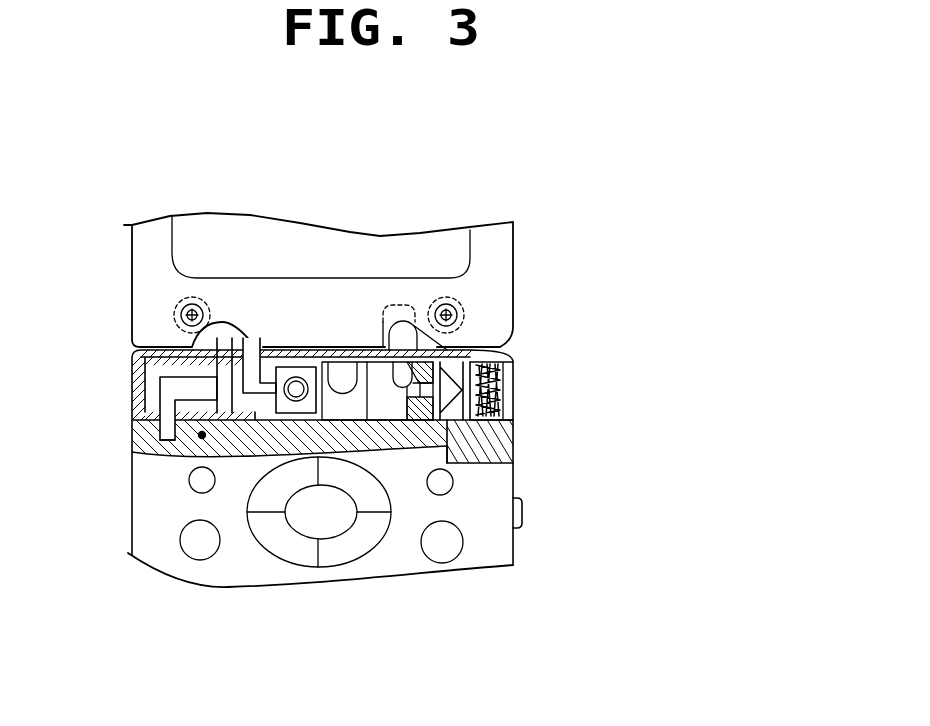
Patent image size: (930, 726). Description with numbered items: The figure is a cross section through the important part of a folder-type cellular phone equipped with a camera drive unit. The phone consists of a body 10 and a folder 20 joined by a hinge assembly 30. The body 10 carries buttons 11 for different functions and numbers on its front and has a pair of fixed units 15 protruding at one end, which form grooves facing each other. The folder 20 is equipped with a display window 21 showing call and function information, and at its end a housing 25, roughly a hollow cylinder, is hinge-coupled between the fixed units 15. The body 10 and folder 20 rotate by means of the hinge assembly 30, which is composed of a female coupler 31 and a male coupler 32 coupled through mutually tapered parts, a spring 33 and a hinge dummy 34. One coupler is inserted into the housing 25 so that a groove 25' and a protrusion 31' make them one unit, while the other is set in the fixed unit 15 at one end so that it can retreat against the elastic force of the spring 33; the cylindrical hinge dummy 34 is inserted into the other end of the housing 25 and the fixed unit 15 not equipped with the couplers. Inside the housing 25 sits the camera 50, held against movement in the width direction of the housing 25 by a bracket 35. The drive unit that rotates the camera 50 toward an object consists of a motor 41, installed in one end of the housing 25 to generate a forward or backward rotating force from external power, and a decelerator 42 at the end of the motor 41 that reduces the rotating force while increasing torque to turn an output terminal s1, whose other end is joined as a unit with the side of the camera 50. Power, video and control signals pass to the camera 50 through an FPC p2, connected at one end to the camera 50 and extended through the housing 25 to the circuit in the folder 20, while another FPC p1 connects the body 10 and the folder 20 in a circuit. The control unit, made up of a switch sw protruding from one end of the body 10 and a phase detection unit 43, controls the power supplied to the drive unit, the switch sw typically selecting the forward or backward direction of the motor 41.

The body 10 is at (526, 558).
The buttons 11 is at (200, 548).
The fixed units 15 is at (510, 362).
The folder 20 is at (523, 252).
The display window 21 is at (223, 227).
The housing 25 is at (134, 442).
The groove 25' is at (413, 264).
The hinge assembly 30 is at (497, 347).
The female coupler 31 is at (470, 537).
The protrusion 31' is at (440, 290).
The male coupler 32 is at (477, 457).
The spring 33 is at (480, 420).
The hinge dummy 34 is at (134, 372).
The bracket 35 is at (278, 415).
The motor 41 is at (380, 420).
The decelerator 42 is at (337, 420).
The phase detection unit 43 is at (337, 365).
The camera 50 is at (296, 402).
The FPC p1 is at (159, 395).
The FPC p2 is at (253, 343).
The output terminal s1 is at (352, 388).
The switch sw is at (522, 523).